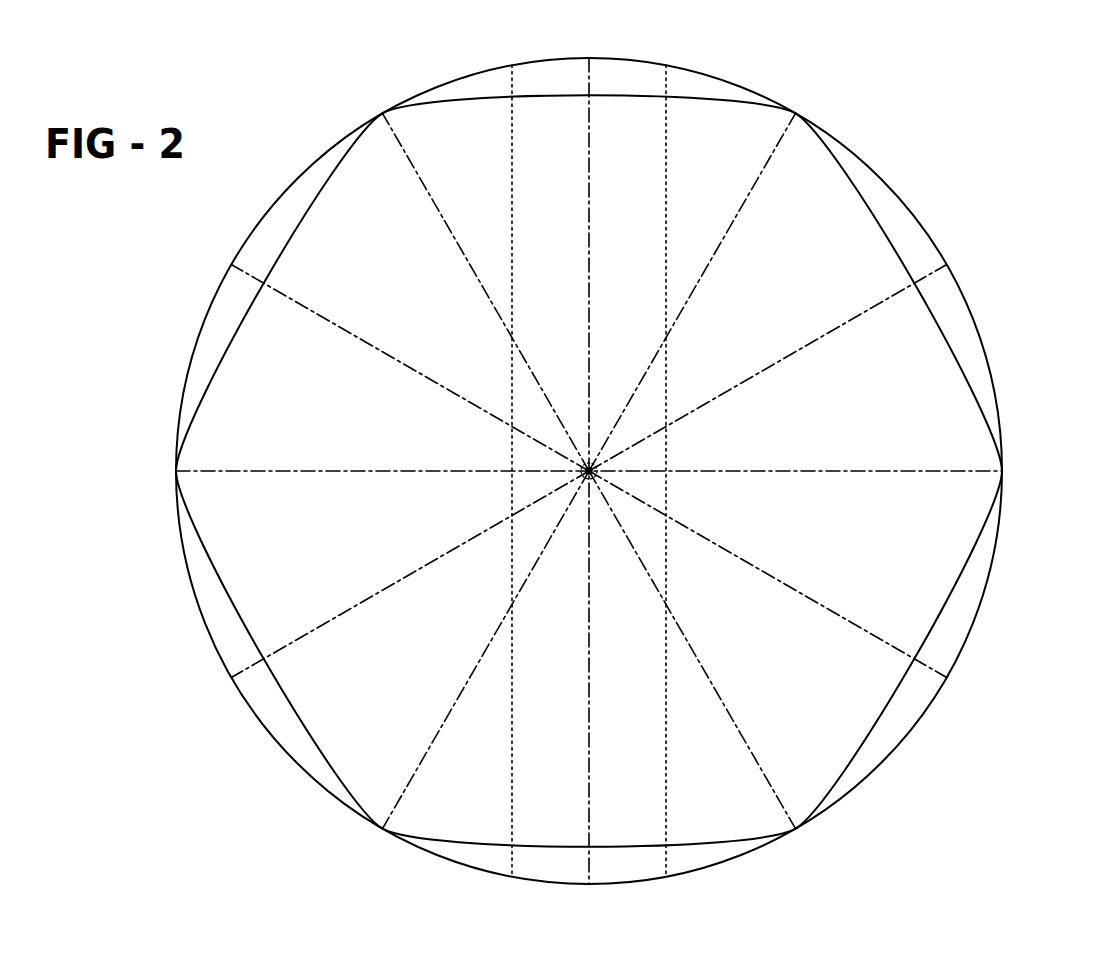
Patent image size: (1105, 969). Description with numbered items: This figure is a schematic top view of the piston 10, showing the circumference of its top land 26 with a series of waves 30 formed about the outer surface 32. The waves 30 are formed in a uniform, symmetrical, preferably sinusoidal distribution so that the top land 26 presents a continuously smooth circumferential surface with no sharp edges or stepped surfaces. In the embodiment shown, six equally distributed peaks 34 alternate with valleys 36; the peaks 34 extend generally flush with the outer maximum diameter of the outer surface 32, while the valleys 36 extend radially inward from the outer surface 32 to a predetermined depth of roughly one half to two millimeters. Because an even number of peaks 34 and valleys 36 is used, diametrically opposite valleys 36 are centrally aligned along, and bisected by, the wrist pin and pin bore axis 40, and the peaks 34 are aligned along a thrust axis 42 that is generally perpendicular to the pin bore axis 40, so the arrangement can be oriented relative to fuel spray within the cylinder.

The piston 10 is at (952, 190).
The top land 26 is at (857, 173).
The waves 30 is at (365, 162).
The outer surface 32 is at (960, 360).
The peaks 34 is at (382, 113).
The valleys 36 is at (589, 96).
The pin bore axis 40 is at (589, 212).
The thrust axis 42 is at (958, 472).